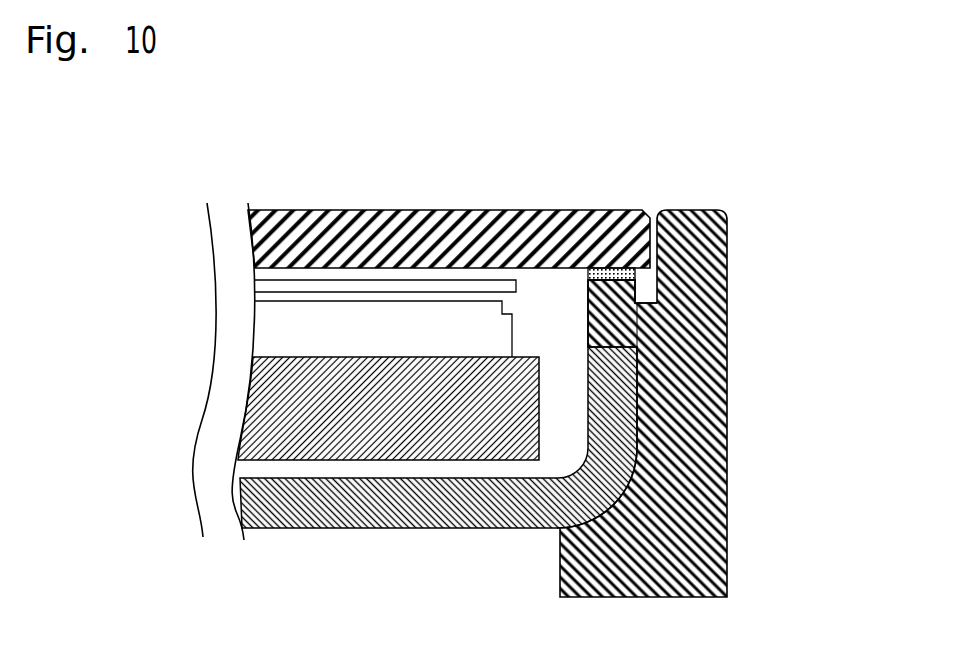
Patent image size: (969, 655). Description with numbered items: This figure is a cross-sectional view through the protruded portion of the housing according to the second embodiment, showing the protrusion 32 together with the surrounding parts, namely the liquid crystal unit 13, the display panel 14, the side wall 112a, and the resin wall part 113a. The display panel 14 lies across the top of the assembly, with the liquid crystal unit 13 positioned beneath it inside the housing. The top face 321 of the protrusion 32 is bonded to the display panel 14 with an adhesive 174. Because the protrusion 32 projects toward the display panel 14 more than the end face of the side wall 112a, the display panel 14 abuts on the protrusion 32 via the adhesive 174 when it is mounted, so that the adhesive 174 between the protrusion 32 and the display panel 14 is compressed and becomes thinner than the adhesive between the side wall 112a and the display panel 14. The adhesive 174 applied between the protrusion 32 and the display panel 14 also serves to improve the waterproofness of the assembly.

The liquid crystal unit 13 is at (248, 423).
The display panel 14 is at (295, 209).
The protrusion 32 is at (588, 293).
The top face 321 is at (608, 272).
The adhesive 174 is at (613, 272).
The side wall 112a is at (637, 413).
The resin wall part 113a is at (728, 510).